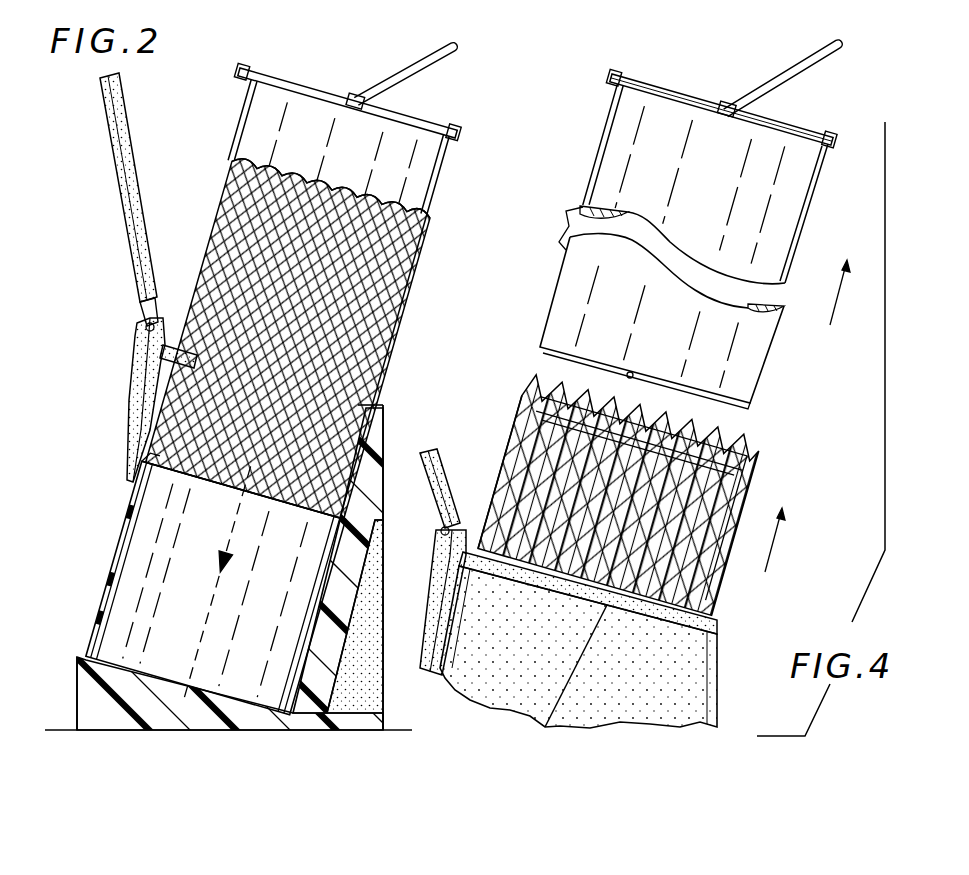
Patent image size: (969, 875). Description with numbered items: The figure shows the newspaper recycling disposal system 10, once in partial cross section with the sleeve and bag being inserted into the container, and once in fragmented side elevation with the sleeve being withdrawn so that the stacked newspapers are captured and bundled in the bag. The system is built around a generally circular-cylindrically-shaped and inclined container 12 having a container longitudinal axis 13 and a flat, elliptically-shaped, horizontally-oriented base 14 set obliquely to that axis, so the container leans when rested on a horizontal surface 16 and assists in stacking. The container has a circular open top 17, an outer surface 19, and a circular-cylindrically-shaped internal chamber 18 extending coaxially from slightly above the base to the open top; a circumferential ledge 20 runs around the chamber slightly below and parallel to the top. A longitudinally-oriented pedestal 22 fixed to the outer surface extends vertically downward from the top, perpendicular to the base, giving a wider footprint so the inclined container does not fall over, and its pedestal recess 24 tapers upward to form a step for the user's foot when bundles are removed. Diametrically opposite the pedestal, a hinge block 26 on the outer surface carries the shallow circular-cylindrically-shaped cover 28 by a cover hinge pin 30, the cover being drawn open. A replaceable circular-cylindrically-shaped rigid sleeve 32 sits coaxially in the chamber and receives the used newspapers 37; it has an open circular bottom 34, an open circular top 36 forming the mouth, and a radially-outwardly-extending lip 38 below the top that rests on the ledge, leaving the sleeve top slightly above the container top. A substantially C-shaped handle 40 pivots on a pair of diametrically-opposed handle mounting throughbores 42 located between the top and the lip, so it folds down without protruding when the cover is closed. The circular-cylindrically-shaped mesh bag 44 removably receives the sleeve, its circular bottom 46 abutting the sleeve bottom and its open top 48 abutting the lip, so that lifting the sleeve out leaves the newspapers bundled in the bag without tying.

In FIG. 2, the newspaper recycling disposal system 10 is at (269, 270).
In FIG. 4, the newspaper recycling disposal system 10 is at (681, 212).
In FIG. 2, the generally circular-cylindrically-shaped and inclined container 12 is at (327, 550).
In FIG. 4, the generally circular-cylindrically-shaped and inclined container 12 is at (600, 640).
In FIG. 2, the container longitudinal axis 13 is at (212, 597).
In FIG. 2, the container generally elliptically-shaped, flat, and horizontally-oriented base 14 is at (245, 728).
In FIG. 2, the horizontal surface 16 is at (60, 727).
In FIG. 2, the container circular-shaped and open top 17 is at (173, 330).
In FIG. 4, the container circular-shaped and open top 17 is at (722, 622).
In FIG. 2, the container circular-cylindrically-shaped internal chamber 18 is at (130, 492).
In FIG. 2, the container outer surface 19 is at (103, 572).
In FIG. 4, the container outer surface 19 is at (518, 645).
In FIG. 2, the container internal chamber circumferential ledge 20 is at (384, 396).
In FIG. 2, the container longitudinally-oriented pedestal 22 is at (383, 727).
In FIG. 2, the container pedestal recess 24 is at (370, 698).
In FIG. 2, the container hinge block 26 is at (134, 405).
In FIG. 4, the container hinge block 26 is at (437, 597).
In FIG. 2, the container shallow and circular-cylindrically-shaped cover 28 is at (118, 183).
In FIG. 4, the container shallow and circular-cylindrically-shaped cover 28 is at (440, 463).
In FIG. 2, the cover hinge pin 30 is at (145, 322).
In FIG. 4, the cover hinge pin 30 is at (450, 500).
In FIG. 2, the replaceable and circular-cylindrically-shaped rigid sleeve 32 is at (241, 126).
In FIG. 4, the replaceable and circular-cylindrically-shaped rigid sleeve 32 is at (587, 154).
In FIG. 2, the sleeve open and circular-shaped bottom 34 is at (380, 366).
In FIG. 4, the sleeve open and circular-shaped bottom 34 is at (630, 372).
In FIG. 2, the sleeve open and circular-shaped top 36 is at (336, 88).
In FIG. 4, the sleeve open and circular-shaped top 36 is at (699, 92).
In FIG. 4, the used newspapers 37 is at (546, 392).
In FIG. 2, the sleeve circumferentially-disposed and radially-outwardly-extending lip 38 is at (246, 72).
In FIG. 4, the sleeve circumferentially-disposed and radially-outwardly-extending lip 38 is at (614, 70).
In FIG. 2, the sleeve substantially C-shaped handle 40 is at (442, 47).
In FIG. 4, the sleeve substantially C-shaped handle 40 is at (815, 58).
In FIG. 2, the sleeve pair of diametrically-opposed handle mounting throughbores 42 is at (361, 96).
In FIG. 4, the sleeve pair of diametrically-opposed handle mounting throughbores 42 is at (730, 100).
In FIG. 2, the circular-cylindrically-shaped mesh bag 44 is at (221, 203).
In FIG. 4, the circular-cylindrically-shaped mesh bag 44 is at (509, 416).
In FIG. 2, the bag circular-shaped bottom 46 is at (262, 497).
In FIG. 2, the bag circular-shaped and open top 48 is at (274, 158).
In FIG. 4, the bag circular-shaped and open top 48 is at (745, 433).